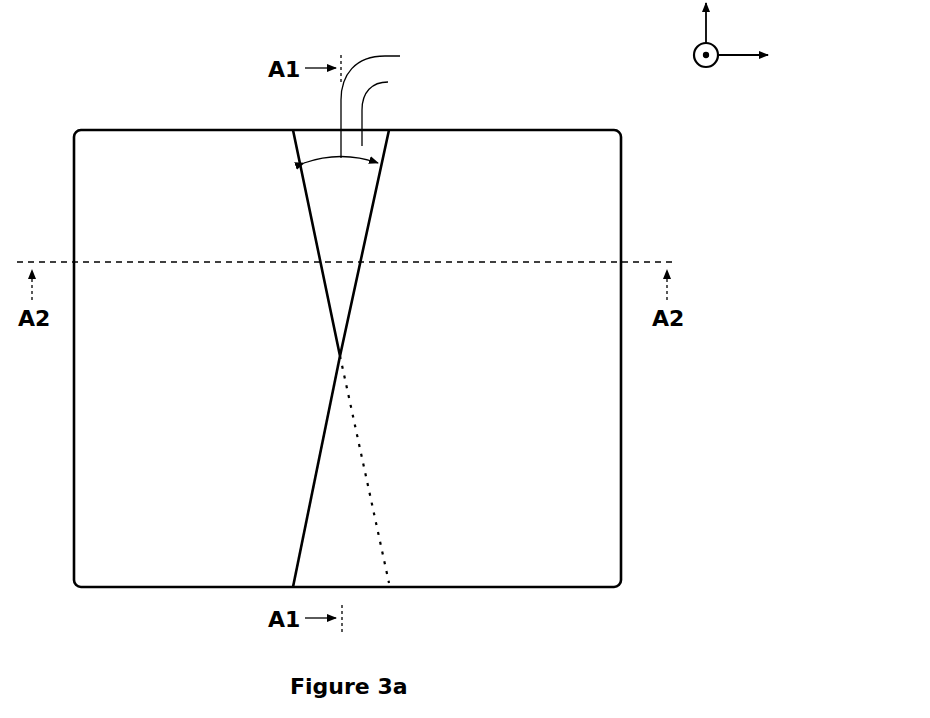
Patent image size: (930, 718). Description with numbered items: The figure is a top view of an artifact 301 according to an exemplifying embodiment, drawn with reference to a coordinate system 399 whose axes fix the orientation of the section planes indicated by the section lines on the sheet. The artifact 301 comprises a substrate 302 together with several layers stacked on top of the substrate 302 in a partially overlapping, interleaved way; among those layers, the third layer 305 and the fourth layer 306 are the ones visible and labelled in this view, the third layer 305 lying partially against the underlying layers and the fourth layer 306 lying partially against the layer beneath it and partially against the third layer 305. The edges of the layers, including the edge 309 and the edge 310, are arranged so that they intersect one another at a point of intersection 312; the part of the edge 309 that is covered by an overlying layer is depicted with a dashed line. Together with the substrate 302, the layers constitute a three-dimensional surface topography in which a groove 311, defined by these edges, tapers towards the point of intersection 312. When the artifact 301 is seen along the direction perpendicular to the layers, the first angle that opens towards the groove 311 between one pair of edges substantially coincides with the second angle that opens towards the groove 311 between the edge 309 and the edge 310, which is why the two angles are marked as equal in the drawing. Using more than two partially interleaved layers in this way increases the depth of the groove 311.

The artifact 301 is at (190, 90).
The substrate 302 is at (341, 243).
The third layer 305 is at (194, 311).
The fourth layer 306 is at (515, 394).
The edge 309 is at (316, 239).
The edge 310 is at (366, 238).
The groove 311 is at (388, 82).
The point of intersection 312 is at (345, 356).
The coordinate system 399 is at (736, 46).